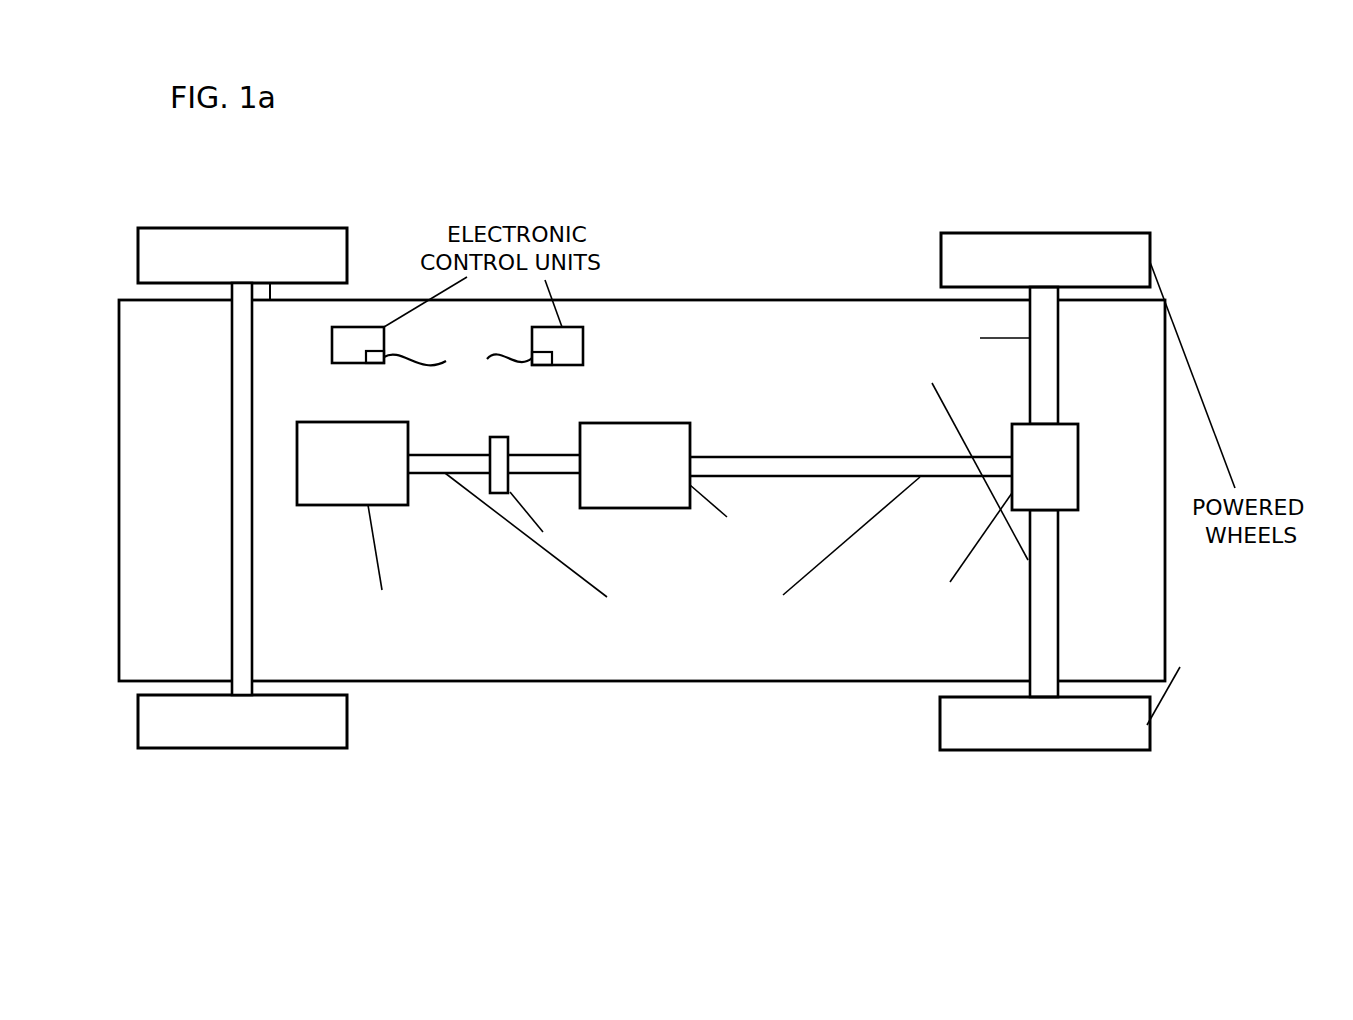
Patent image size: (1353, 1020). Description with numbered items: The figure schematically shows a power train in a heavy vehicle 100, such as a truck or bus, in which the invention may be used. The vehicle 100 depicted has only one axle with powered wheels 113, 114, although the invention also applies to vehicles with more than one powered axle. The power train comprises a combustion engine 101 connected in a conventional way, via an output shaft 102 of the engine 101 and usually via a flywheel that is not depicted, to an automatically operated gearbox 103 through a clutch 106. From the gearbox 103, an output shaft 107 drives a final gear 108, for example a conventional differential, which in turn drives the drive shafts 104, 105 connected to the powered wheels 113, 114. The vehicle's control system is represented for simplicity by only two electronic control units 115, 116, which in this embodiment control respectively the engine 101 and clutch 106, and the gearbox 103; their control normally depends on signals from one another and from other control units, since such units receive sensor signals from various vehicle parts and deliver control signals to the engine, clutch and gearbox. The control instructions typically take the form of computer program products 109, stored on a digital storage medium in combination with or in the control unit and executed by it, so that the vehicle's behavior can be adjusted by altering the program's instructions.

The heavy vehicle 100 is at (552, 143).
The combustion engine 101 is at (330, 497).
The output shaft 102 is at (432, 461).
The gearbox 103 is at (637, 432).
The drive shaft 104 is at (1060, 352).
The drive shaft 105 is at (1060, 610).
The clutch 106 is at (498, 487).
The output shaft 107 is at (938, 470).
The final gear 108 is at (1078, 462).
The computer program products 109 is at (458, 360).
The powered wheel 113 is at (1150, 252).
The powered wheel 114 is at (1150, 720).
The electronic control unit 115 is at (583, 342).
The electronic control unit 116 is at (358, 345).